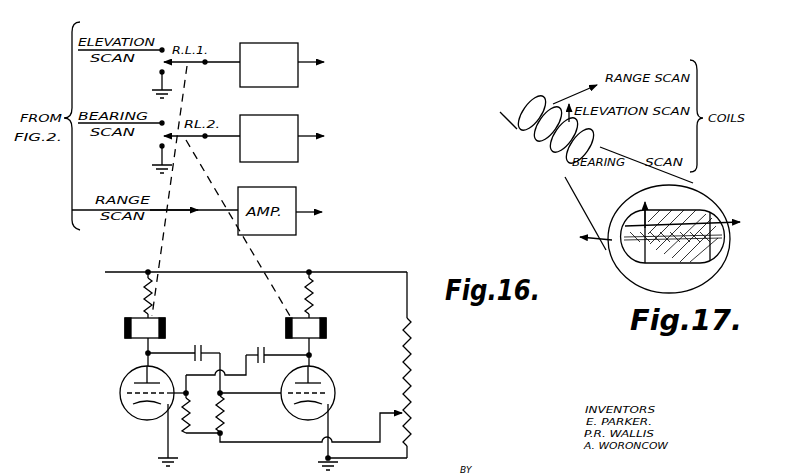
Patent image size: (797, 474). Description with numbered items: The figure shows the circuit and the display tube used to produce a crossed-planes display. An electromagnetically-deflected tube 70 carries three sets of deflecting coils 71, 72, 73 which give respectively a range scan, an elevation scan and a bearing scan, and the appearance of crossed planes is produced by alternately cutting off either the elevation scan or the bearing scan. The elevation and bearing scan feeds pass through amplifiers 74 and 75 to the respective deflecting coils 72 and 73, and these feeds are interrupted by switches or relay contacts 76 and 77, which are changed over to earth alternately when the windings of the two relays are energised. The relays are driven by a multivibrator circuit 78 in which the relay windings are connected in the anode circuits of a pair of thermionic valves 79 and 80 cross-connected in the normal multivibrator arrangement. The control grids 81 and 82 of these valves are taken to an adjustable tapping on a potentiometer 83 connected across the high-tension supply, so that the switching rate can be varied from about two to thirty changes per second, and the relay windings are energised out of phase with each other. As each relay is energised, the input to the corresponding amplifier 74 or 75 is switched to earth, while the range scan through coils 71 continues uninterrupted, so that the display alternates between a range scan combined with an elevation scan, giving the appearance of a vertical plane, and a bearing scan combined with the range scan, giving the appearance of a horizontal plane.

In FIG. 17, the electromagnetically-deflected tube 70 is at (628, 274).
In FIG. 16, the range scan deflecting coils 71 is at (383, 211).
In FIG. 17, the range scan deflecting coils 71 is at (540, 100).
In FIG. 16, the elevation scan deflecting coils 72 is at (393, 63).
In FIG. 17, the elevation scan deflecting coils 72 is at (542, 166).
In FIG. 16, the bearing scan deflecting coils 73 is at (390, 137).
In FIG. 17, the bearing scan deflecting coils 73 is at (560, 180).
In FIG. 16, the elevation scan amplifier 74 is at (253, 43).
In FIG. 16, the bearing scan amplifier 75 is at (253, 115).
In FIG. 16, the relay contact 76 is at (205, 64).
In FIG. 16, the relay contact 77 is at (205, 138).
In FIG. 16, the multivibrator circuit 78 is at (232, 465).
In FIG. 16, the thermionic valve 79 is at (136, 376).
In FIG. 16, the thermionic valve 80 is at (320, 372).
In FIG. 16, the control grid 81 is at (124, 403).
In FIG. 16, the control grid 82 is at (332, 392).
In FIG. 16, the potentiometer 83 is at (402, 338).